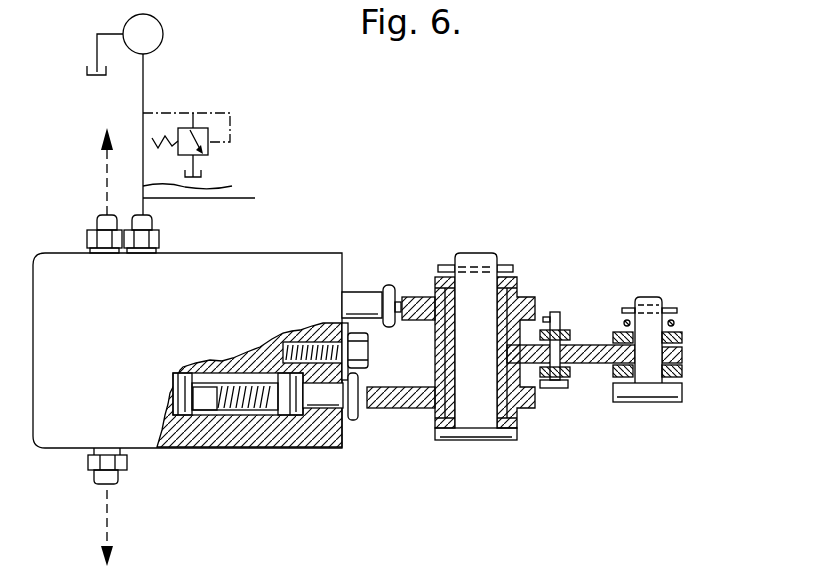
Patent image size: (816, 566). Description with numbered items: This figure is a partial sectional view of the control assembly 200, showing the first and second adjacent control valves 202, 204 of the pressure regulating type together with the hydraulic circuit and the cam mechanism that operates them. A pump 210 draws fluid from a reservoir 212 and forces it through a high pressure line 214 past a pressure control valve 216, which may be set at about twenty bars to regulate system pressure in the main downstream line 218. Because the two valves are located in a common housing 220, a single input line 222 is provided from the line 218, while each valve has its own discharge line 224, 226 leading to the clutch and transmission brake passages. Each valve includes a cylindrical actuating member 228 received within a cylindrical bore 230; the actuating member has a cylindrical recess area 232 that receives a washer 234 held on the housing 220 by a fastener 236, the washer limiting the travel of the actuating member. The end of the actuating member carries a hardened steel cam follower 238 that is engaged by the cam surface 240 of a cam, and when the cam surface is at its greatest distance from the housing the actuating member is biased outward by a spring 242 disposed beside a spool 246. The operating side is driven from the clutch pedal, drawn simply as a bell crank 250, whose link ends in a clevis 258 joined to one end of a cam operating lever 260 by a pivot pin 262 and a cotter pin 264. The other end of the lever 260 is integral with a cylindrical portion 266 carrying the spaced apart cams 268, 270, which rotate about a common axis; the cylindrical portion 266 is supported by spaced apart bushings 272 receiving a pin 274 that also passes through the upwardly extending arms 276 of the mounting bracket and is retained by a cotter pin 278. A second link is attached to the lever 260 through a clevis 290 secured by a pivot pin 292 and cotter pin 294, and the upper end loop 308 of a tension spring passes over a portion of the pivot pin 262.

The control assembly 200 is at (462, 202).
The first control valve 202 is at (353, 434).
The second control valve 204 is at (356, 262).
The pump 210 is at (163, 34).
The reservoir 212 is at (205, 176).
The high pressure line 214 is at (143, 80).
The pressure control valve 216 is at (208, 151).
The main downstream line 218 is at (228, 197).
The housing 220 is at (108, 366).
The input line 222 is at (145, 207).
The discharge line 224 is at (96, 488).
The discharge line 226 is at (92, 227).
The actuating member 228 is at (287, 448).
The cylindrical bore 230 is at (323, 448).
The cylindrical recess area 232 is at (342, 350).
The washer 234 is at (355, 364).
The fastener 236 is at (368, 345).
The cam follower 238 is at (362, 412).
The cam surface 240 is at (535, 407).
The spring 242 is at (227, 448).
The spool 246 is at (180, 448).
The bell crank 250 is at (428, 556).
The clevis 258 is at (686, 368).
The cam operating lever 260 is at (595, 358).
The pivot pin 262 is at (660, 402).
The cotter pin 264 is at (662, 300).
The cylindrical portion 266 is at (510, 349).
The cam 268 is at (420, 410).
The cam 270 is at (418, 297).
The bushing 272 is at (520, 424).
The pin 274 is at (503, 442).
The arm 276 is at (527, 432).
The cotter pin 278 is at (507, 265).
The clevis 290 is at (565, 334).
The pivot pin 292 is at (556, 390).
The cotter pin 294 is at (560, 314).
The upper end loop 308 is at (675, 323).